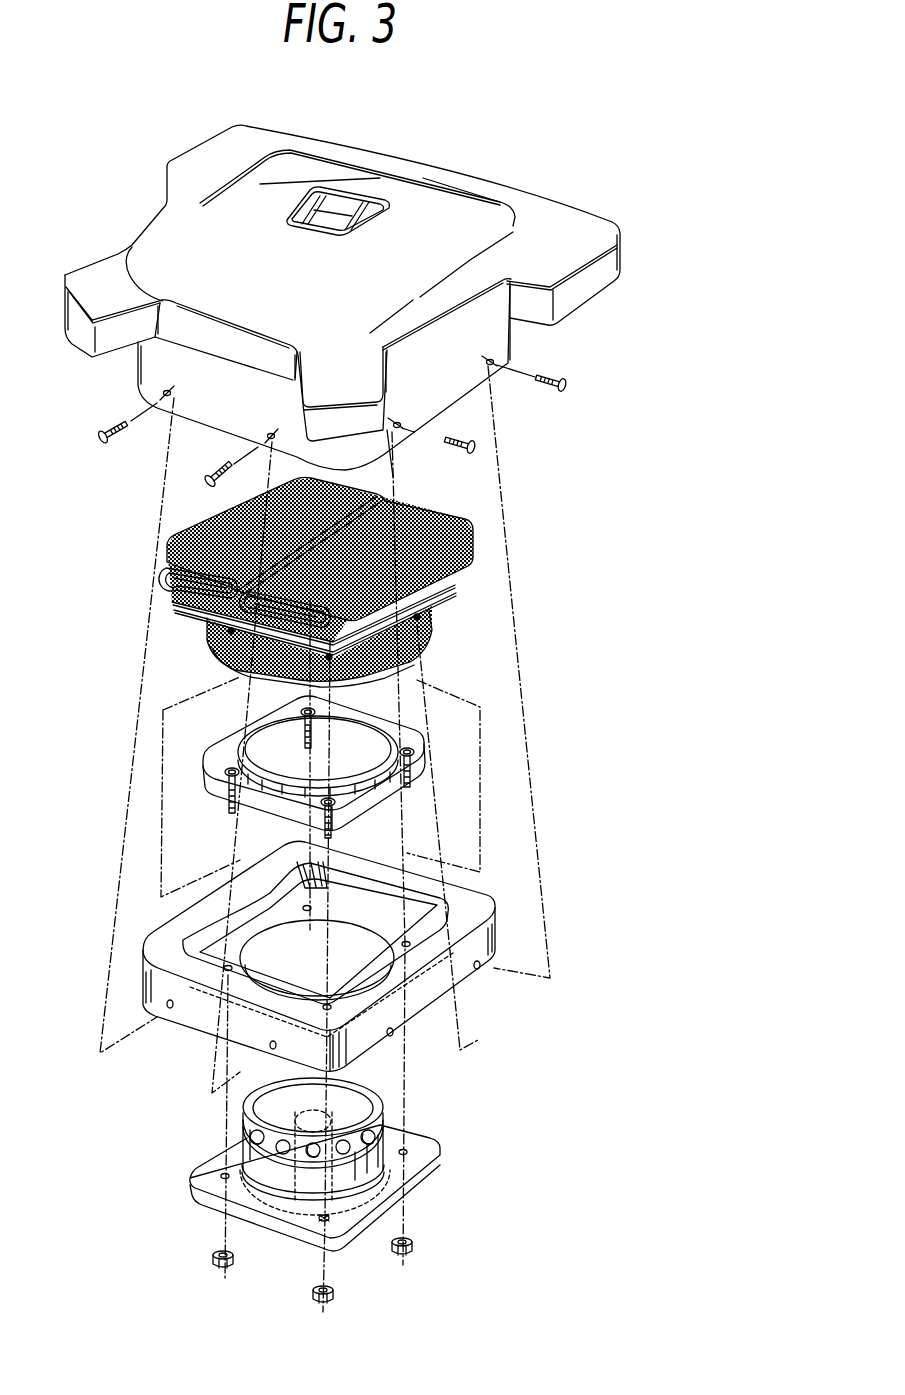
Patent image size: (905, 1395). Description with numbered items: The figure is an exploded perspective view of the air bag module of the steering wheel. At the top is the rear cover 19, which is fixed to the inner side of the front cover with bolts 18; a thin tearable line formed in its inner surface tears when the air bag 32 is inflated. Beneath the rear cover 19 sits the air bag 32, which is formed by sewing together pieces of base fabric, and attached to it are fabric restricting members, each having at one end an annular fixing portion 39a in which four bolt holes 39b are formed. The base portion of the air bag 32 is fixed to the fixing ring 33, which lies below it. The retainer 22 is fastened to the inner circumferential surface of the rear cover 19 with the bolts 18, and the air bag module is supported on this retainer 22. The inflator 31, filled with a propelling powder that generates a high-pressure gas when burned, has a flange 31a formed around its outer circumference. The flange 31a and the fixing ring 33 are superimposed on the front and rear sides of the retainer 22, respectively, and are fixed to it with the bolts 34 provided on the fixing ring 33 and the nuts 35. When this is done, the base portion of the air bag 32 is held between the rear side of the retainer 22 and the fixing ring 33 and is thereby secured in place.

The rear cover 19 is at (534, 187).
The bolts 18 is at (96, 436).
The air bag 32 is at (473, 543).
The annular fixing portion 39a is at (229, 634).
The bolt holes 39b is at (428, 637).
The bolts 34 is at (229, 769).
The fixing ring 33 is at (265, 807).
The retainer 22 is at (197, 1023).
The inflator 31 is at (385, 1113).
The flange 31a is at (436, 1150).
The nuts 35 is at (212, 1257).